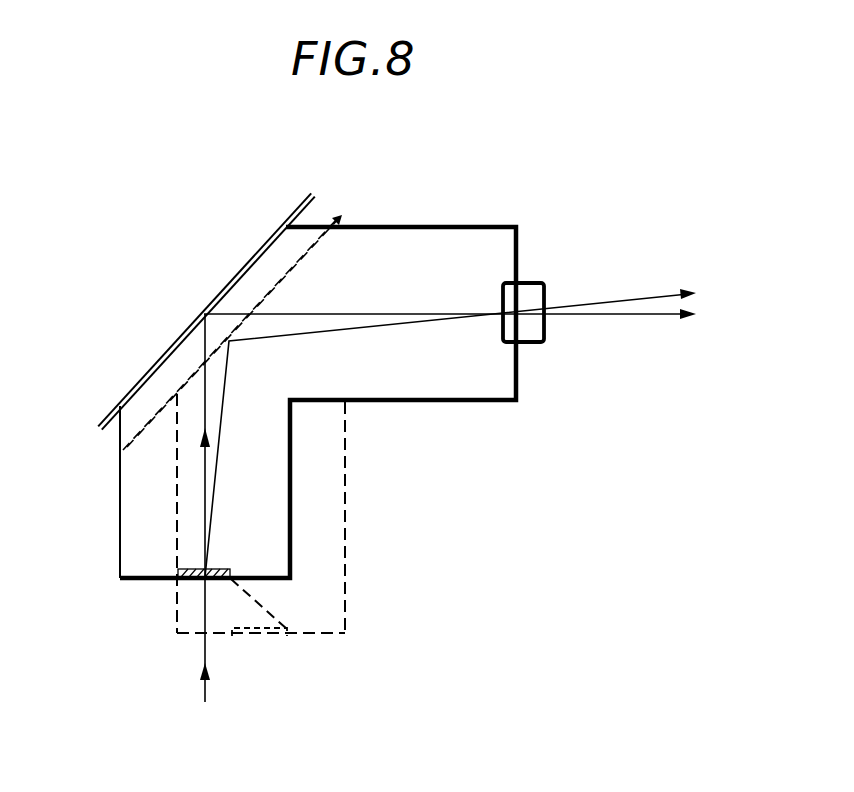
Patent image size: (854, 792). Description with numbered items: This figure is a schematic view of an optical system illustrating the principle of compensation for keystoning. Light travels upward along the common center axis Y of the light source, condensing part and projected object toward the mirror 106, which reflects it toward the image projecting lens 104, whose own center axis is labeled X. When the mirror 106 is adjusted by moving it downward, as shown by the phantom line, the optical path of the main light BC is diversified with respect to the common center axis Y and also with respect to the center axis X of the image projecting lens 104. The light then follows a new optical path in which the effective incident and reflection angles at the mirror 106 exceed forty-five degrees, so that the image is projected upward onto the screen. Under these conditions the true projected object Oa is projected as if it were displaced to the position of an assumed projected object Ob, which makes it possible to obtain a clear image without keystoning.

The mirror 106 is at (158, 362).
The image projecting lens 104 is at (533, 292).
The main light BC is at (370, 313).
The true projected object Oa is at (187, 570).
The assumed projected object Ob is at (260, 622).
The center axis of the image projecting lens X is at (466, 313).
The common center axis Y is at (219, 438).